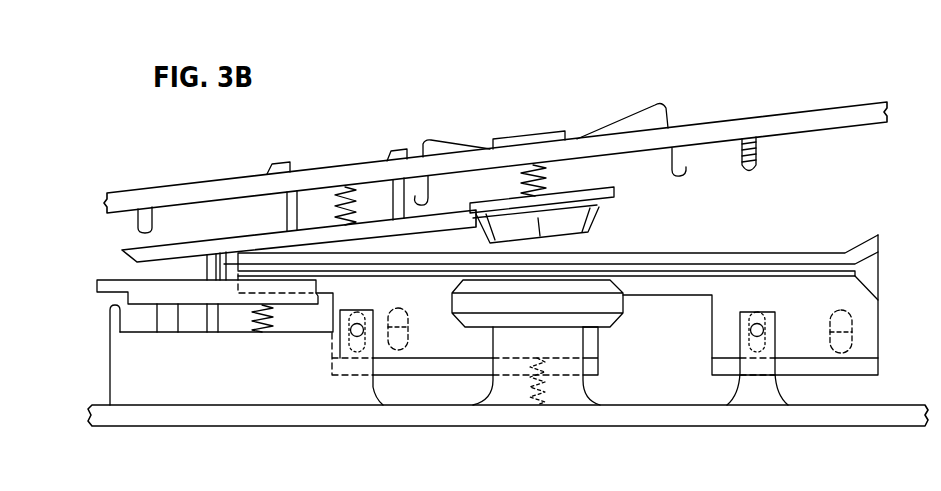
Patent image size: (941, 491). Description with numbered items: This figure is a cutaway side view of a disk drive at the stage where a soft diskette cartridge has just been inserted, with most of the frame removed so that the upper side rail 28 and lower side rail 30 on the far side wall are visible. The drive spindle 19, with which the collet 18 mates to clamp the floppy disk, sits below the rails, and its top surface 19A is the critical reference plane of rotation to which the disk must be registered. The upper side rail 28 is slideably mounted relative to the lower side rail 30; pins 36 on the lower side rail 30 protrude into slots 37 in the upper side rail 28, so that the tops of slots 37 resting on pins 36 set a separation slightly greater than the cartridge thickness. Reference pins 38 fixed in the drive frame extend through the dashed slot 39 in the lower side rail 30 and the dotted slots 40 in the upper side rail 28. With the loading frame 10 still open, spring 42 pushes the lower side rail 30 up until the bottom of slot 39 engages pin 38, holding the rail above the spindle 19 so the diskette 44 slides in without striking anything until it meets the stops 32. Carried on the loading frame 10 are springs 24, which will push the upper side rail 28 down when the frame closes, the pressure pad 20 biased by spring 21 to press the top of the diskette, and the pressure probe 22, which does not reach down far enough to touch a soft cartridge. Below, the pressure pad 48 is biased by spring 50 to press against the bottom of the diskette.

The loading frame 10 is at (777, 122).
The collet 18 is at (580, 204).
The drive spindle 19 is at (603, 307).
The top surface of the drive spindle 19A is at (587, 277).
The pressure pad 20 is at (165, 252).
The spring 21 is at (333, 203).
The pressure probe 22 is at (756, 168).
The springs 24 is at (635, 111).
The upper side rail 28 is at (777, 257).
The lower side rail 30 is at (860, 307).
The stops 32 is at (207, 268).
The pins 36 is at (402, 317).
The slots 37 is at (400, 337).
The reference pins 38 is at (351, 334).
The slot 39 is at (358, 311).
The slots 40 is at (340, 355).
The spring 42 is at (543, 398).
The diskette 44 is at (845, 275).
The pressure pad 48 is at (140, 292).
The spring 50 is at (252, 318).